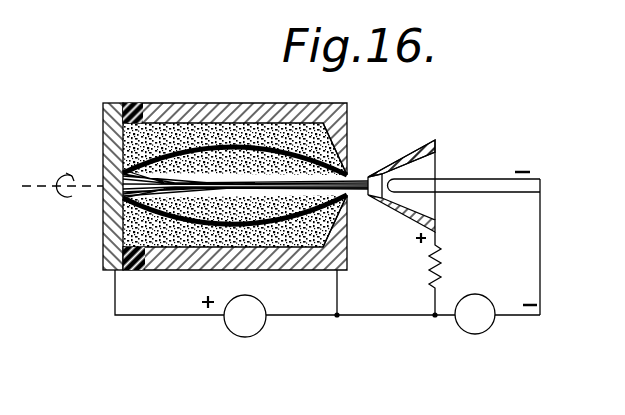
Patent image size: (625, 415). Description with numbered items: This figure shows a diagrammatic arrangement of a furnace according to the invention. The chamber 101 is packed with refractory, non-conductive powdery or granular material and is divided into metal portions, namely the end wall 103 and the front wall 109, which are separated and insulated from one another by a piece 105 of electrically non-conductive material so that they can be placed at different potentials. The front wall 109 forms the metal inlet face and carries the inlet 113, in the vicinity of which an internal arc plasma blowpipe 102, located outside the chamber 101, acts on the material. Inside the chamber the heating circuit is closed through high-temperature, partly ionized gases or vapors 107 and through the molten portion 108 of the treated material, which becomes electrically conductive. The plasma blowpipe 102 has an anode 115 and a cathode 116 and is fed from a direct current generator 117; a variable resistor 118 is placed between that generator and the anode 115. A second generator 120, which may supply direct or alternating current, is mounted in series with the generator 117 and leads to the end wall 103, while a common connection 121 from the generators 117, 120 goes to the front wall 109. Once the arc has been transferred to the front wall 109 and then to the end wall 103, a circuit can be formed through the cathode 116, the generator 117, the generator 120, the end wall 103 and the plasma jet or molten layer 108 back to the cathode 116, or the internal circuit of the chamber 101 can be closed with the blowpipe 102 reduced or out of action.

The chamber 101 is at (222, 103).
The plasma blowpipe 102 is at (437, 172).
The end wall 103 is at (103, 220).
The insulating piece 105 is at (136, 91).
The gases or vapors 107 is at (215, 183).
The molten portion 108 is at (166, 188).
The front wall 109 is at (348, 227).
The inlet 113 is at (346, 173).
The anode 115 is at (417, 150).
The cathode 116 is at (478, 182).
The direct current generator 117 is at (487, 302).
The variable resistor 118 is at (439, 258).
The generator 120 is at (252, 311).
The common connection 121 is at (342, 287).